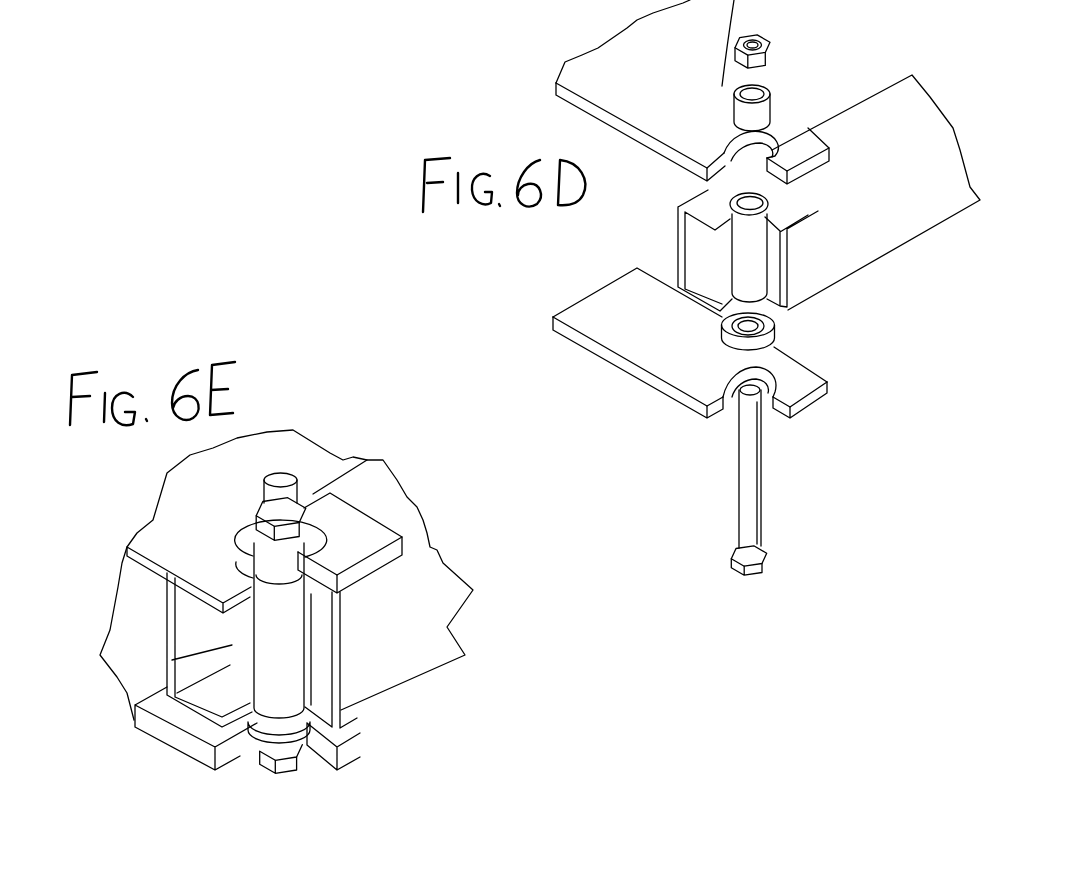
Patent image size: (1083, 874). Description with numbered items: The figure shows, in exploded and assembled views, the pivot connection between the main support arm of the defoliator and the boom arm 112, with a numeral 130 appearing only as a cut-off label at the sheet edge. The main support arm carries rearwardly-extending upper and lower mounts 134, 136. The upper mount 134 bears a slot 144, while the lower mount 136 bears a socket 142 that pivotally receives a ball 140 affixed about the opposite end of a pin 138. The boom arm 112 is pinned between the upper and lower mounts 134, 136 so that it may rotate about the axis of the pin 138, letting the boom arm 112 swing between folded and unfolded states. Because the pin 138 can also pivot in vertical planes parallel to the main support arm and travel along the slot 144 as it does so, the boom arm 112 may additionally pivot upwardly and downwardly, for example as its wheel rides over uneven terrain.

In FIG. 6D, the boom arm 112 is at (868, 113).
In FIG. 6E, the boom arm 112 is at (432, 657).
In FIG. 6D, the mounting assembly 130 is at (239, 10).
In FIG. 6D, the upper mount 134 is at (703, 62).
In FIG. 6E, the upper mount 134 is at (245, 472).
In FIG. 6D, the lower mount 136 is at (620, 332).
In FIG. 6E, the lower mount 136 is at (193, 723).
In FIG. 6D, the pin 138 is at (737, 457).
In FIG. 6E, the pin 138 is at (168, 650).
In FIG. 6D, the ball 140 is at (724, 338).
In FIG. 6D, the socket 142 is at (776, 335).
In FIG. 6E, the socket 142 is at (273, 727).
In FIG. 6D, the slot 144 is at (725, 152).
In FIG. 6E, the slot 144 is at (247, 540).